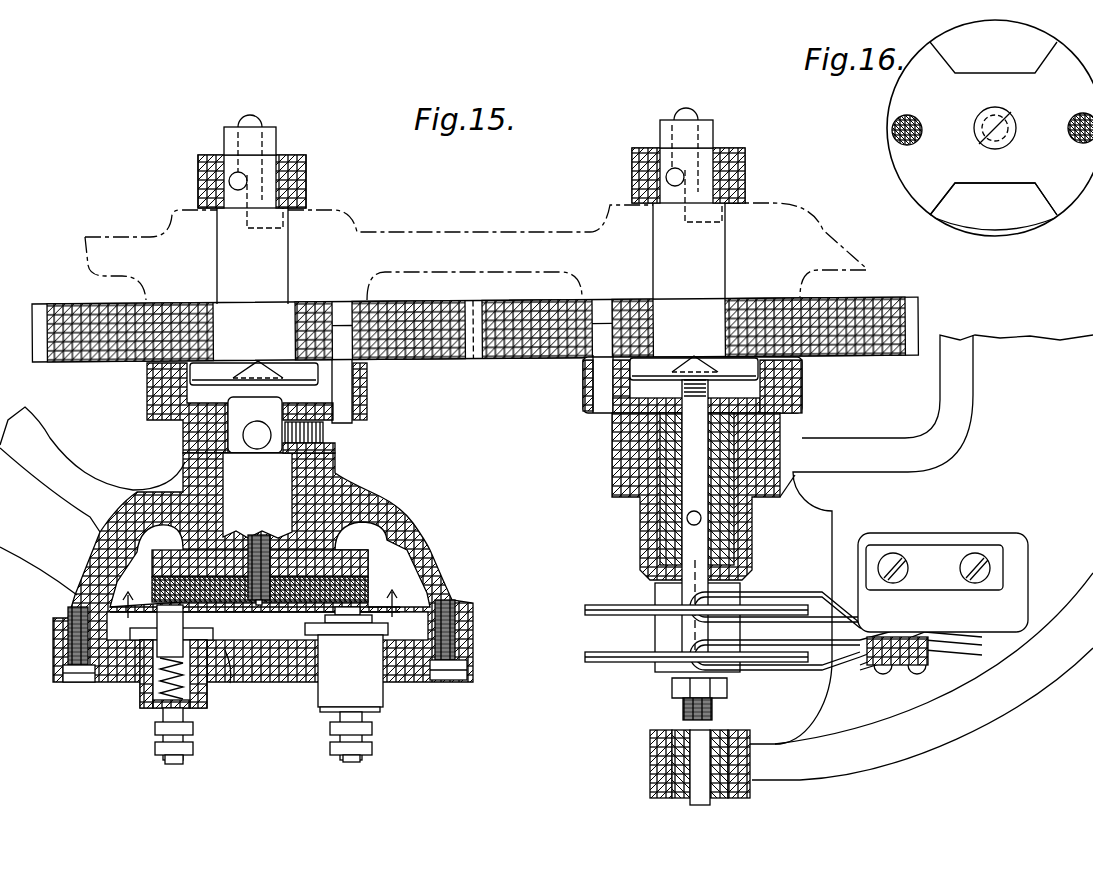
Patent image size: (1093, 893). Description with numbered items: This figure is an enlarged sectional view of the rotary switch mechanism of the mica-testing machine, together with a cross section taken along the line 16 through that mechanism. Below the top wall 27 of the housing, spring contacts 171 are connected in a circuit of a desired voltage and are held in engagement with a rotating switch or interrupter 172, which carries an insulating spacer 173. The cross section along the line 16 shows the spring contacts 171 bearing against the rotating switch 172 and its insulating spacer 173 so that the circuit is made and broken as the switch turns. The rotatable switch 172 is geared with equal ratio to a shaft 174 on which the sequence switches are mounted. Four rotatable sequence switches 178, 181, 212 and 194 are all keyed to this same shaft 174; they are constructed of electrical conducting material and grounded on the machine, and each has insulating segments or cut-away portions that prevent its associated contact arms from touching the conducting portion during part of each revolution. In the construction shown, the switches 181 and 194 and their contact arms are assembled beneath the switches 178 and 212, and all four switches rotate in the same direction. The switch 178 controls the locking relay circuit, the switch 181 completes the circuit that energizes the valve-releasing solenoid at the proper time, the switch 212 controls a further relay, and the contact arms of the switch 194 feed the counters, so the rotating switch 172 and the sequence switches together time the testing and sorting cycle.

In FIG. 15, the top wall 27 is at (476, 232).
In FIG. 15, the spring contacts 171 is at (347, 612).
In FIG. 16, the spring contacts 171 is at (890, 122).
In FIG. 15, the rotary switch 172 is at (335, 547).
In FIG. 16, the rotary switch 172 is at (967, 220).
In FIG. 15, the insulating spacer 173 is at (370, 583).
In FIG. 16, the insulating spacer 173 is at (920, 178).
In FIG. 15, the shaft 174 is at (688, 477).
In FIG. 15, the sequence switch 178 is at (608, 600).
In FIG. 15, the sequence switch 181 is at (600, 624).
In FIG. 15, the sequence switch 212 is at (600, 647).
In FIG. 15, the sequence switch 194 is at (600, 662).
In FIG. 15, the section line 16 is at (259, 614).